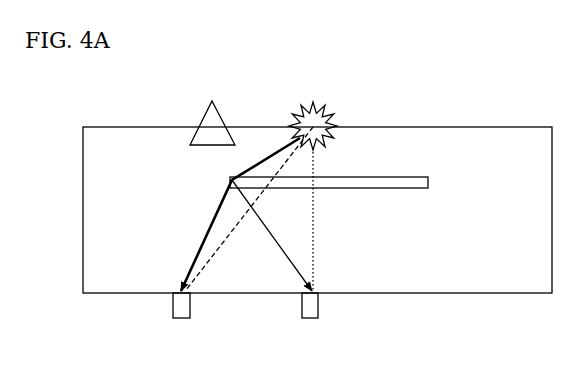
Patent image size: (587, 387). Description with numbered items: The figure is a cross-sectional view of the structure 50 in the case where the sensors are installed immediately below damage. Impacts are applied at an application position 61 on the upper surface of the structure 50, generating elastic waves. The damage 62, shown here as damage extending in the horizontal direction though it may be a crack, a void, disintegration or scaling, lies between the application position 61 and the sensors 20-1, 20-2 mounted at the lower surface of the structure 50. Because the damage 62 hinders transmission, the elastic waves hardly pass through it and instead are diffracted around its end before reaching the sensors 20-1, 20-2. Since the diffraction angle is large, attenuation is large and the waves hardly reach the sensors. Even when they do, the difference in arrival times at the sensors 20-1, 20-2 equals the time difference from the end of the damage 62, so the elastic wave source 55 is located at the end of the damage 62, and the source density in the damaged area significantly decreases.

The structure 50 is at (483, 160).
The elastic wave source 55 is at (218, 98).
The application position 61 is at (330, 110).
The damage 62 is at (374, 176).
The sensor 20-1 is at (180, 320).
The sensor 20-2 is at (310, 320).